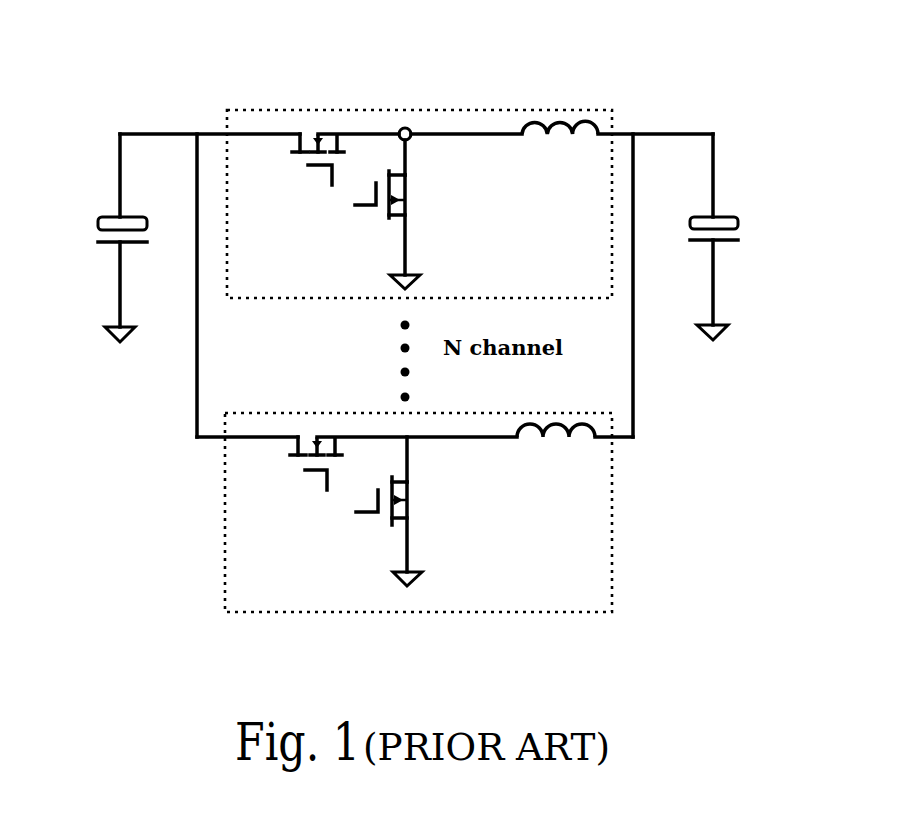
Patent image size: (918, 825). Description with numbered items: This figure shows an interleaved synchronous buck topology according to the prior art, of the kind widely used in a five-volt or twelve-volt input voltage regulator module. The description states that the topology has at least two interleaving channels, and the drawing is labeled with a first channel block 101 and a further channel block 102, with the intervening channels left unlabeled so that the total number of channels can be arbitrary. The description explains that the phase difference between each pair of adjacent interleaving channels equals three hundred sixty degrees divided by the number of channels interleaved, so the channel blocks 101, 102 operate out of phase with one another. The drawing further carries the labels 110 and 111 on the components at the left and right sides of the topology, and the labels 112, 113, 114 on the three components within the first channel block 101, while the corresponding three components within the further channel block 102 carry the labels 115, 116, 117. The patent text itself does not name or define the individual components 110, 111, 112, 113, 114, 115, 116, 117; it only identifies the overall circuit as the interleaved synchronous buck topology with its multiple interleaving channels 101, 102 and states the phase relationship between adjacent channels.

The first channel of multiphase converter 101 is at (442, 154).
The N-th channel of multiphase converter 102 is at (500, 512).
The input capacitor 110 is at (102, 238).
The output capacitor 111 is at (728, 237).
The high-side switch transistor of first channel 112 is at (302, 173).
The low-side switch transistor of first channel 113 is at (363, 214).
The inductor of first channel 114 is at (560, 152).
The high-side switch transistor of N-th channel 115 is at (302, 471).
The low-side switch transistor of N-th channel 116 is at (379, 511).
The inductor of N-th channel 117 is at (556, 457).